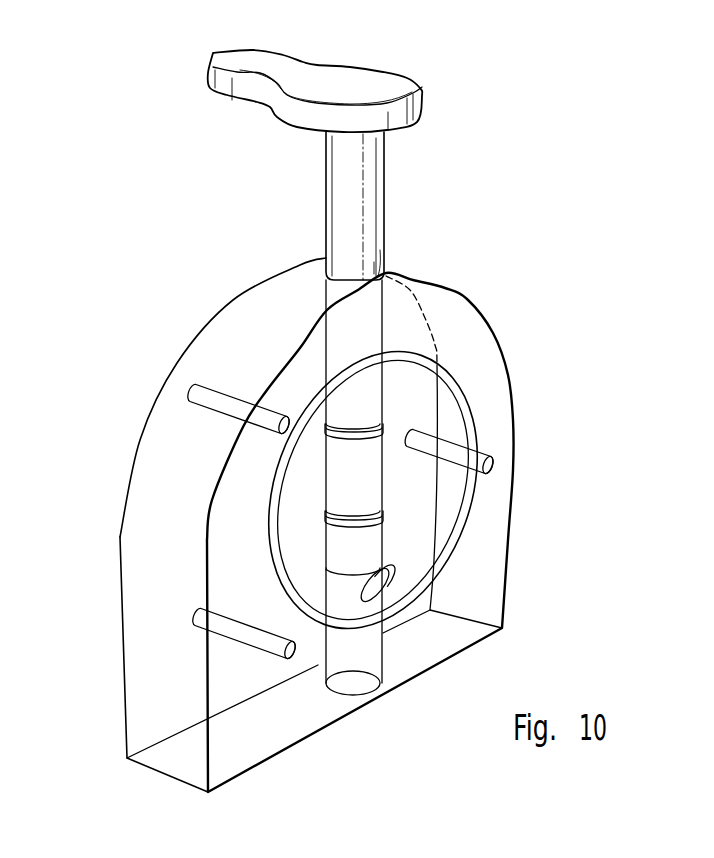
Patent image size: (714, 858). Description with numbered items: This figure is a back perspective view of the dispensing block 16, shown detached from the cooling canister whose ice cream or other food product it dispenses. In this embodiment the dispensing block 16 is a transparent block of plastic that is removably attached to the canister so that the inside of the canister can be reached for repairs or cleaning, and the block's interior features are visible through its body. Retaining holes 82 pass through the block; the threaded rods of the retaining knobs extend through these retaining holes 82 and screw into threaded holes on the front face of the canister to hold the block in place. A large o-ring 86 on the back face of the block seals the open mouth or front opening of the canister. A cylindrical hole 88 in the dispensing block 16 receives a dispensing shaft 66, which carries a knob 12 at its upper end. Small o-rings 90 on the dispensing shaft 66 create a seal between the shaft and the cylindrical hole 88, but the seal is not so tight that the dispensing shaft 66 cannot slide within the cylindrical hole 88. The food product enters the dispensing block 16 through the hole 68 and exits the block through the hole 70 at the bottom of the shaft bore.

The knob 12 is at (245, 55).
The dispensing shaft 66 is at (370, 202).
The cylindrical hole 88 is at (380, 270).
The dispensing block 16 is at (168, 363).
The retaining holes 82 is at (218, 415).
The large o-ring 86 is at (277, 550).
The small o-rings 90 is at (375, 428).
The hole 68 is at (391, 582).
The hole 70 is at (353, 698).